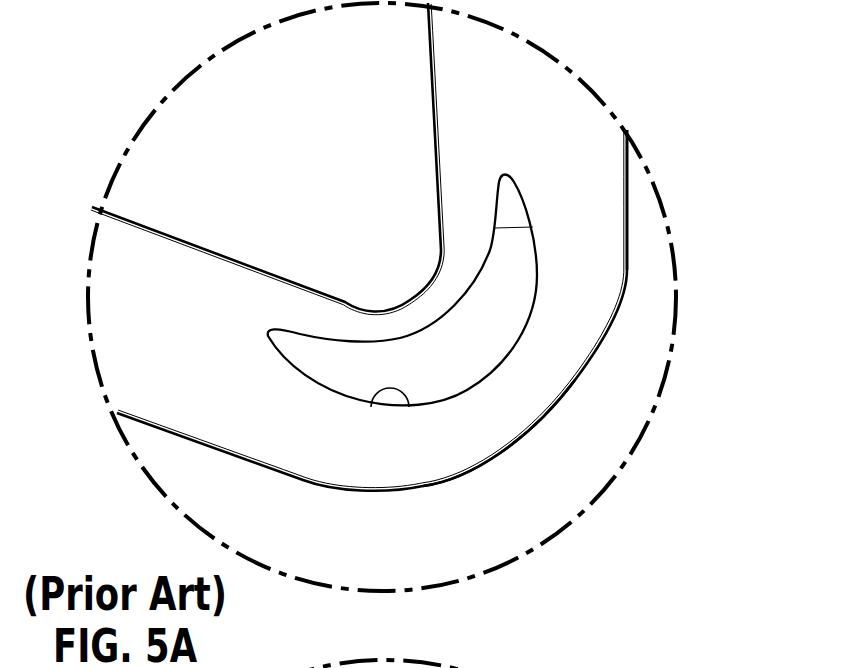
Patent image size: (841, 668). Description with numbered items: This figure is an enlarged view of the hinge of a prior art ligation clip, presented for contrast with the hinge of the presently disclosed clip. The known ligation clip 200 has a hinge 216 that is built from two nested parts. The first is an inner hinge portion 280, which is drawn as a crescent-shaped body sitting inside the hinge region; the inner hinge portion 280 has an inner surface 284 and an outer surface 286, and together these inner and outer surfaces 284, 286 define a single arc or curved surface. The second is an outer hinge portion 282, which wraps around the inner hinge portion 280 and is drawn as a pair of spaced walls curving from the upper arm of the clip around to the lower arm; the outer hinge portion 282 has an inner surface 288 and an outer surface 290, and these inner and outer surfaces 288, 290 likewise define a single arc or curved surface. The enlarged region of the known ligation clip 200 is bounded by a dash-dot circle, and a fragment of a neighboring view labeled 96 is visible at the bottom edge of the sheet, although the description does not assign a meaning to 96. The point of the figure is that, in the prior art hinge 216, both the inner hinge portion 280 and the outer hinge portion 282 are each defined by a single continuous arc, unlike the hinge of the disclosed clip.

The known ligation clip 200 is at (645, 130).
The inner hinge portion 280 is at (403, 300).
The outer hinge portion 282 is at (637, 260).
The inner surface of inner hinge portion 284 is at (349, 302).
The outer surface of inner hinge portion 286 is at (495, 228).
The inner surface of outer hinge portion 288 is at (410, 405).
The outer surface of outer hinge portion 290 is at (513, 447).
The hinge 216 is at (570, 425).
The adjacent figure element 96 is at (385, 655).